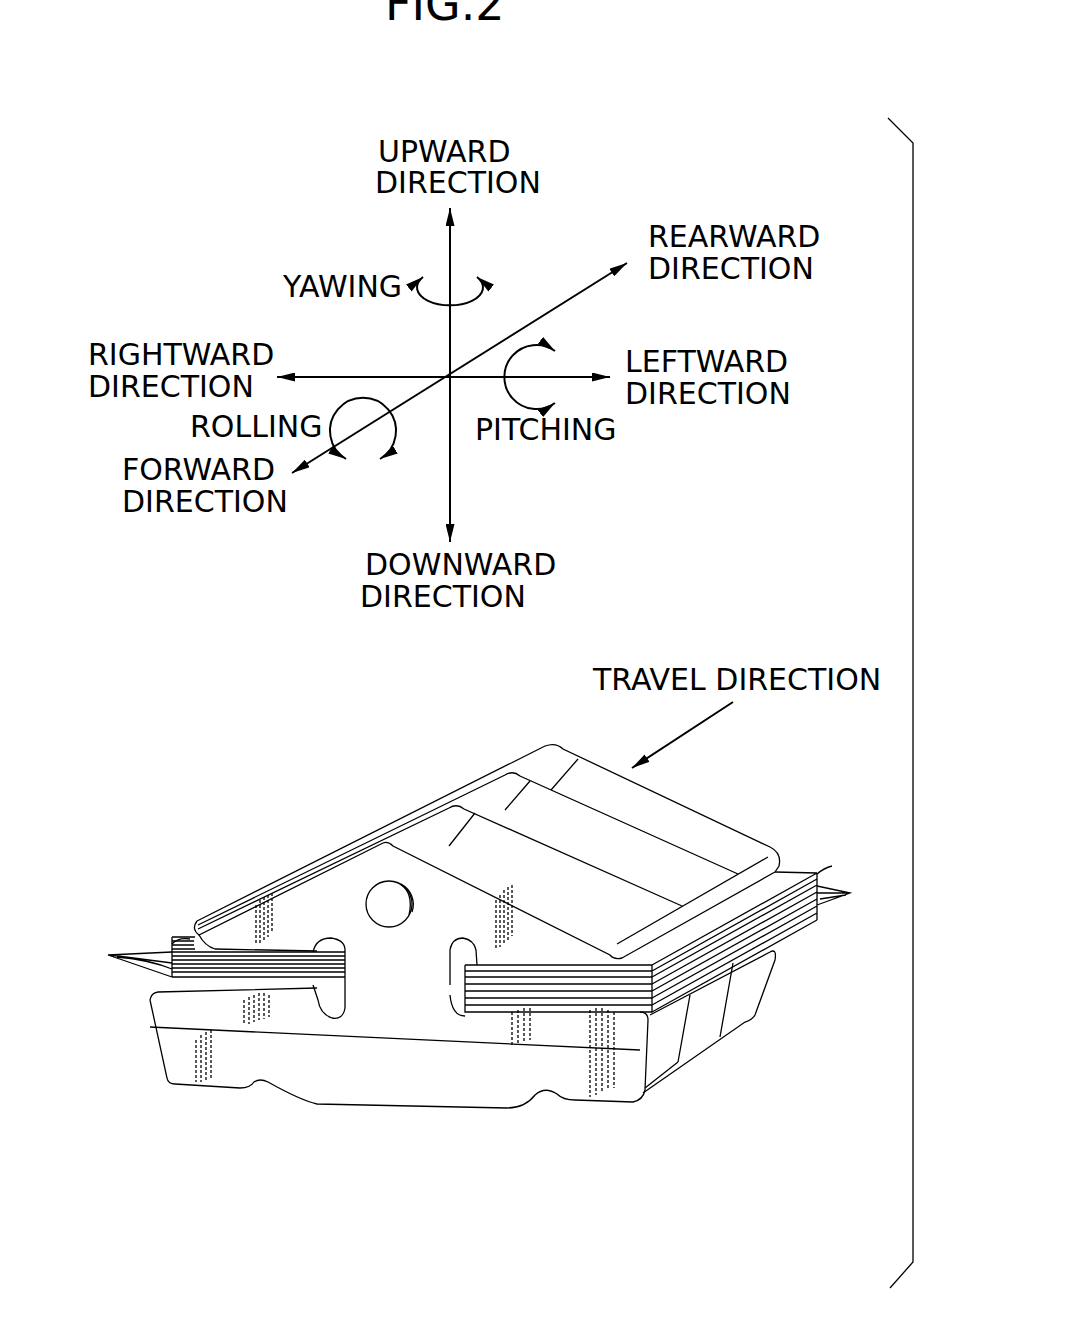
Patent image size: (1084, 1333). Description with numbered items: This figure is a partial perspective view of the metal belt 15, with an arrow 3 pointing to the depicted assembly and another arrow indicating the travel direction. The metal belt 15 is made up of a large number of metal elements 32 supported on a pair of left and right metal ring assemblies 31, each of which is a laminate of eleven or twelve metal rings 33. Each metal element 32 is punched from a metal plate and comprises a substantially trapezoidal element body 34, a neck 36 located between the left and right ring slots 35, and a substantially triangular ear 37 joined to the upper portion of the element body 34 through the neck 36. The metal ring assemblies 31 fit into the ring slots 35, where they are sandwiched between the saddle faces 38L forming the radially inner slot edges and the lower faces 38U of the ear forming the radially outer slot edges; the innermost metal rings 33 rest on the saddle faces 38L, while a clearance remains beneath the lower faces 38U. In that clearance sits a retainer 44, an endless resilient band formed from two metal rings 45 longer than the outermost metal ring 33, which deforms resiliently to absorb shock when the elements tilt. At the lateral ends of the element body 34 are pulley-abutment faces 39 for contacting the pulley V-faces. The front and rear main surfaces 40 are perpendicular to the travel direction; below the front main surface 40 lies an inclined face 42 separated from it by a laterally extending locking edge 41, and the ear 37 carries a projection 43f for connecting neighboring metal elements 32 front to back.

The magnetic head 3 is at (318, 1113).
The metal belt 15 is at (458, 758).
The metal ring assembly 31 is at (230, 950).
The metal element 32 is at (507, 1133).
The metal ring 33 is at (110, 955).
The element body 34 is at (188, 1067).
The ring slot 35 is at (323, 1010).
The neck 36 is at (397, 1007).
The ear 37 is at (308, 883).
The lower face of the ear 38U is at (287, 953).
The saddle face 38L is at (237, 983).
The pulley-abutment face 39 is at (657, 1067).
The main surface 40 is at (407, 976).
The locking edge 41 is at (315, 1037).
The inclined face 42 is at (389, 1098).
The projection 43f is at (387, 897).
The retainer 44 is at (190, 927).
The metal ring of the retainer 45 is at (175, 939).